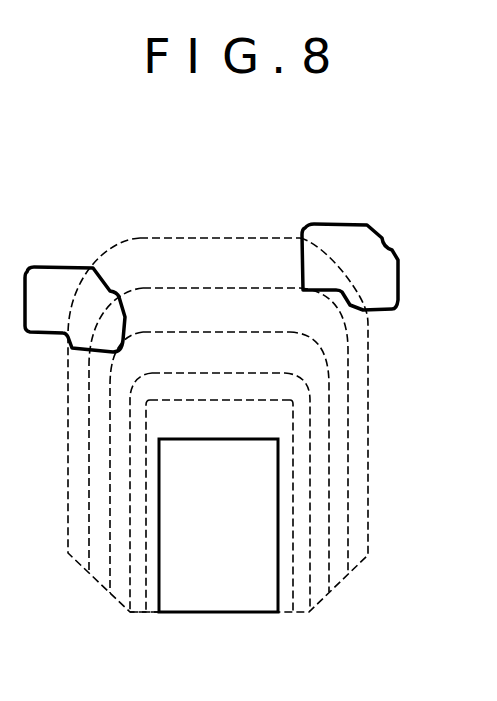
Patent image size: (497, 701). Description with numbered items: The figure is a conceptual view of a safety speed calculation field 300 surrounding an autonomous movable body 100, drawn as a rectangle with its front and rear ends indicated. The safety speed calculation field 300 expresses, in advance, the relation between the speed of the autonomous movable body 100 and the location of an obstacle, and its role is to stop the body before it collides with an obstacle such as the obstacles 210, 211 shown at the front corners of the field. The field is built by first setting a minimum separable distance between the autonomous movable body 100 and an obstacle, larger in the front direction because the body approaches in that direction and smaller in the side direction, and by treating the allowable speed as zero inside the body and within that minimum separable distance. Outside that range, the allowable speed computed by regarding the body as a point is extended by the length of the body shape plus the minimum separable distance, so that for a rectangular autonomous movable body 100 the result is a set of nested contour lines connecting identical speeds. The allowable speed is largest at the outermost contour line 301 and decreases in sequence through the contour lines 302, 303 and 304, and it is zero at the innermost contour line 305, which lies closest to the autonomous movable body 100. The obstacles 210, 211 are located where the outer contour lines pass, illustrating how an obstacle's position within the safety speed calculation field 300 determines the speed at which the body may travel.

The autonomous movable body 100 is at (253, 597).
The obstacle 210 is at (58, 268).
The obstacle 211 is at (350, 224).
The safety speed calculation field 300 is at (148, 614).
The contour line 301 is at (368, 394).
The contour line 302 is at (348, 421).
The contour line 303 is at (329, 448).
The contour line 304 is at (310, 485).
The contour line 305 is at (293, 516).